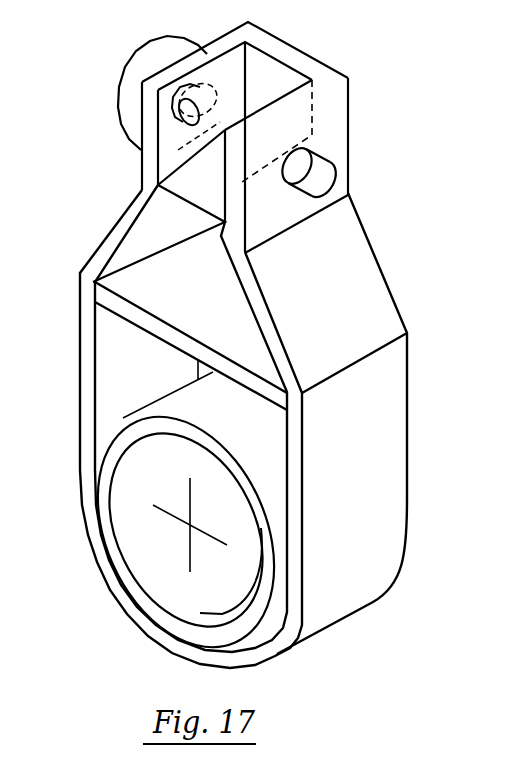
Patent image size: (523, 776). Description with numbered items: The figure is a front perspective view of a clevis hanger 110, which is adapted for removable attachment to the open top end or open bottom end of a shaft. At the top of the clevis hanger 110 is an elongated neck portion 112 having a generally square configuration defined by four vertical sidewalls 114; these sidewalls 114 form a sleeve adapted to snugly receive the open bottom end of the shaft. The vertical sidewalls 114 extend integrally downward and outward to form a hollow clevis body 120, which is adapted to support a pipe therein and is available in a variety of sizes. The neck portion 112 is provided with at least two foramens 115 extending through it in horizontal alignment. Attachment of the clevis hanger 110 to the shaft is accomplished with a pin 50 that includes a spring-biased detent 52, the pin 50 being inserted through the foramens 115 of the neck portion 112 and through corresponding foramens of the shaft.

The pin 50 is at (124, 96).
The spring-biased detent 52 is at (333, 178).
The clevis hanger 110 is at (408, 283).
The elongated neck portion 112 is at (253, 230).
The vertical sidewalls 114 is at (206, 52).
The foramens 115 is at (312, 138).
The hollow clevis body 120 is at (80, 338).